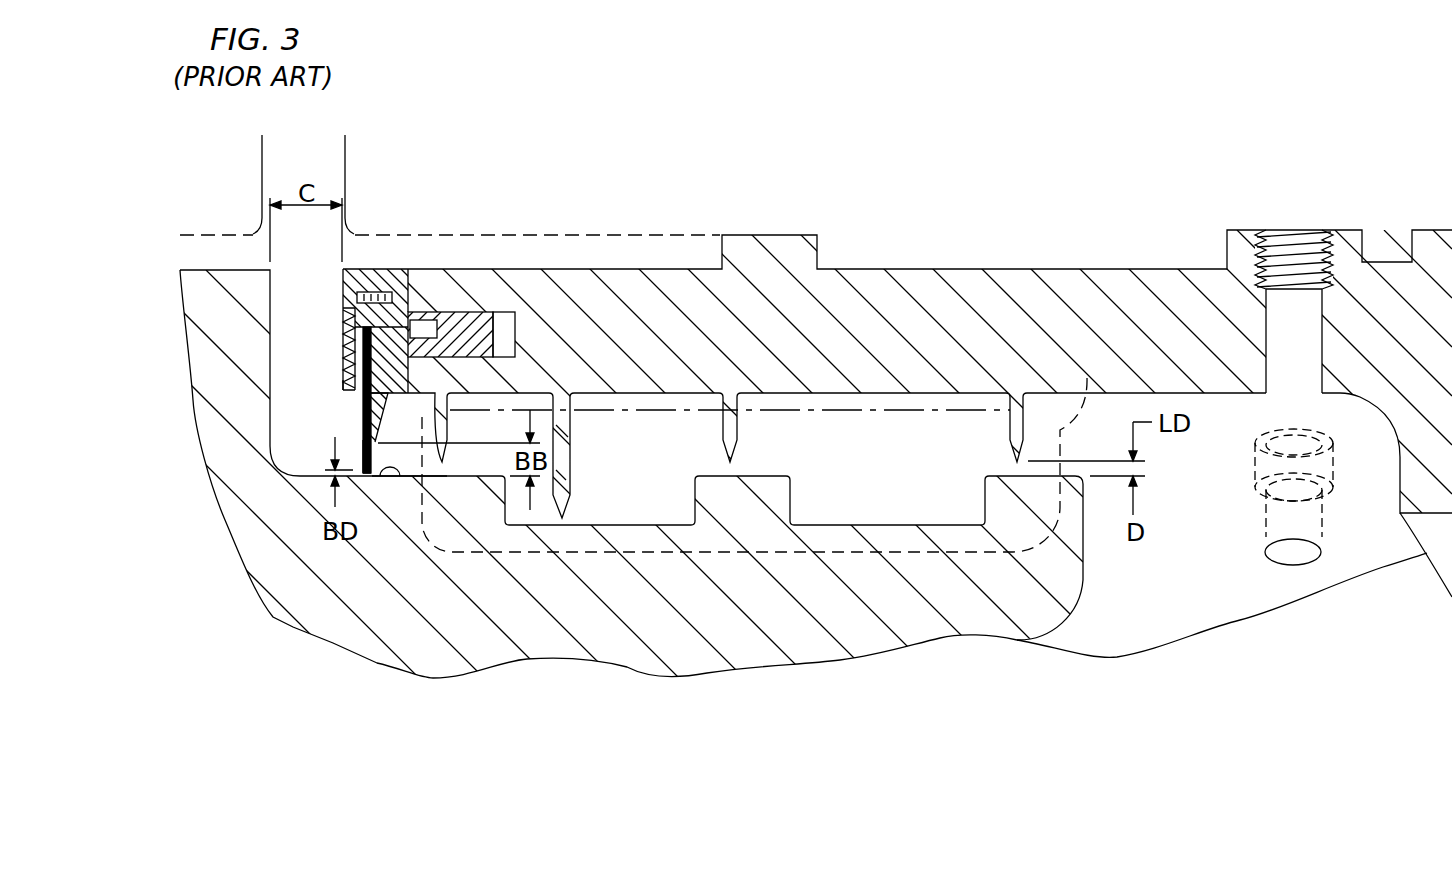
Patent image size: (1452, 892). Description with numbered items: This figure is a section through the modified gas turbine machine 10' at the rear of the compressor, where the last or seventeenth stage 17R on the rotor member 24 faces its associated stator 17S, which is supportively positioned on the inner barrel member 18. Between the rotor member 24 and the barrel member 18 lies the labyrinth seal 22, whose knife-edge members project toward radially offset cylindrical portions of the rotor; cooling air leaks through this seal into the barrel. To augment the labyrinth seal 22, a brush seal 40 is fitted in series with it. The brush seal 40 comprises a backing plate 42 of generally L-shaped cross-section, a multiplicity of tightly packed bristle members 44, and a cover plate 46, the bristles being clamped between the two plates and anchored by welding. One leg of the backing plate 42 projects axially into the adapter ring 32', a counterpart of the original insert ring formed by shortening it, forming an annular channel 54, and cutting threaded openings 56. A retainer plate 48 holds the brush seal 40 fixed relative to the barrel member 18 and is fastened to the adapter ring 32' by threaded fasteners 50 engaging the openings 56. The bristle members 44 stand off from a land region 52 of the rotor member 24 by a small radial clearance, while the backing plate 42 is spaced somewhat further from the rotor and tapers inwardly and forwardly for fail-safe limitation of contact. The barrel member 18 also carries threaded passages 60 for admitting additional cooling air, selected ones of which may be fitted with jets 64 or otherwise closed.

The machine 10' is at (816, 488).
The last or seventeenth stage 17R is at (257, 232).
The stator 17S is at (462, 232).
The inner barrel member 18 is at (957, 337).
The labyrinth seal 22 is at (763, 453).
The rotor member 24 is at (777, 601).
The adapter ring 32' is at (540, 334).
The brush seal 40 is at (362, 409).
The backing plate 42 is at (384, 426).
The bristle members 44 is at (361, 425).
The cover plate 46 is at (346, 392).
The retainer plate 48 is at (343, 330).
The threaded fasteners 50 is at (345, 292).
The land region 52 is at (403, 478).
The annular channel 54 is at (437, 322).
The threaded openings 56 is at (387, 290).
The threaded passages 60 is at (1320, 373).
The jets 64 is at (1332, 463).